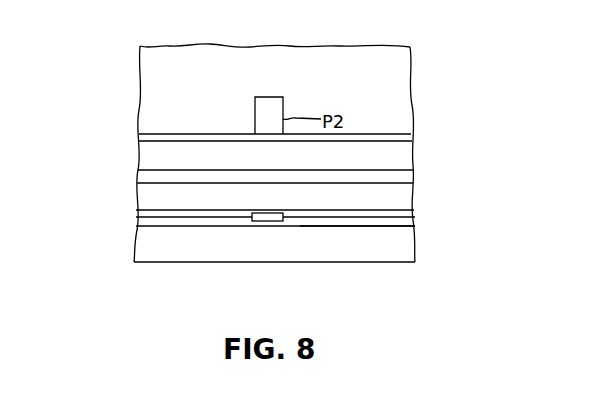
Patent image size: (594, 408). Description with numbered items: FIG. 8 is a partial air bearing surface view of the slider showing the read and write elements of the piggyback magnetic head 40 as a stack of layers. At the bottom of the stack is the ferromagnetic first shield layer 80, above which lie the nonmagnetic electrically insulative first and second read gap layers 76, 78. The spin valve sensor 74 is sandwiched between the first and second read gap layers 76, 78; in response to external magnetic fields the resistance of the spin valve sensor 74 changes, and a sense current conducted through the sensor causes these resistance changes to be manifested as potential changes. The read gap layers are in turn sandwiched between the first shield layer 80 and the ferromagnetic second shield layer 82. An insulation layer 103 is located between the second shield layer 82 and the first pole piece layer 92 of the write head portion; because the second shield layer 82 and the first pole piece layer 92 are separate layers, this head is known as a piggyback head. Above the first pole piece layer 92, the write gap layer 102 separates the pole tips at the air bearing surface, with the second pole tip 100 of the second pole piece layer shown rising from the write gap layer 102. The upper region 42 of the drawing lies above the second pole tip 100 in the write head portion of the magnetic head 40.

The piggyback magnetic head 40 is at (432, 60).
The upper dielectric layer 42 is at (143, 70).
The second pole tip 100 is at (265, 104).
The write gap layer 102 is at (199, 134).
The first pole piece layer 92 is at (145, 154).
The insulation layer 103 is at (405, 178).
The second shield layer 82 is at (142, 200).
The spin valve sensor 74 is at (268, 222).
The first read gap layer 76 is at (190, 226).
The second read gap layer 78 is at (377, 213).
The first shield layer 80 is at (405, 246).